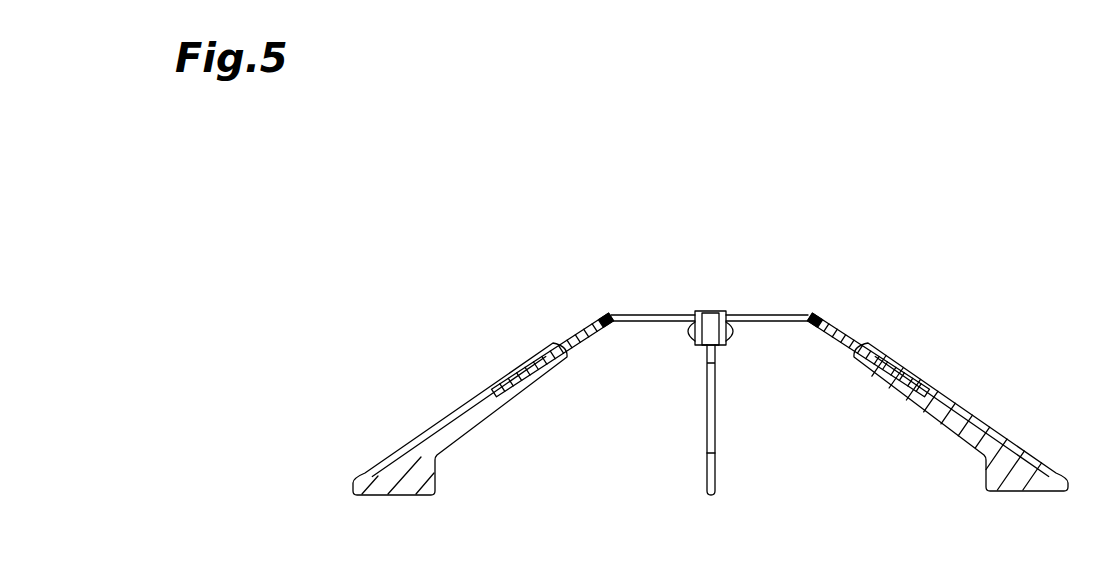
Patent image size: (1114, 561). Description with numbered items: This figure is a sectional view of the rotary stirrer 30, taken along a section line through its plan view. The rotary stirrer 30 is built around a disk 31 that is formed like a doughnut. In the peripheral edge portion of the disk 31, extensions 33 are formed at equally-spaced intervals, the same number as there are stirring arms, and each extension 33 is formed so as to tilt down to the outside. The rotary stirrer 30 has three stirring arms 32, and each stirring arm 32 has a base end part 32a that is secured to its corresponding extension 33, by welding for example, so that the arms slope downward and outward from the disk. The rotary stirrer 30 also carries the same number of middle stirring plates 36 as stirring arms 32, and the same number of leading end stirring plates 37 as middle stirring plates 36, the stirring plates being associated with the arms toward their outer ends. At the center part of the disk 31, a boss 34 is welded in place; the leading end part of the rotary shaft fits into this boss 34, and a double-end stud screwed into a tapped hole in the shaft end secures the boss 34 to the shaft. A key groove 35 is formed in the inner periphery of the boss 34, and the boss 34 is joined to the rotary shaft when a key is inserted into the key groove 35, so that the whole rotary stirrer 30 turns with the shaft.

The rotary stirrer 30 is at (877, 207).
The disk 31 is at (622, 316).
The stirring arm 32 is at (567, 343).
The base end part 32a is at (600, 318).
The extension 33 is at (601, 340).
The boss 34 is at (680, 320).
The key groove 35 is at (735, 319).
The middle stirring plate 36 is at (450, 423).
The leading end stirring plate 37 is at (374, 481).